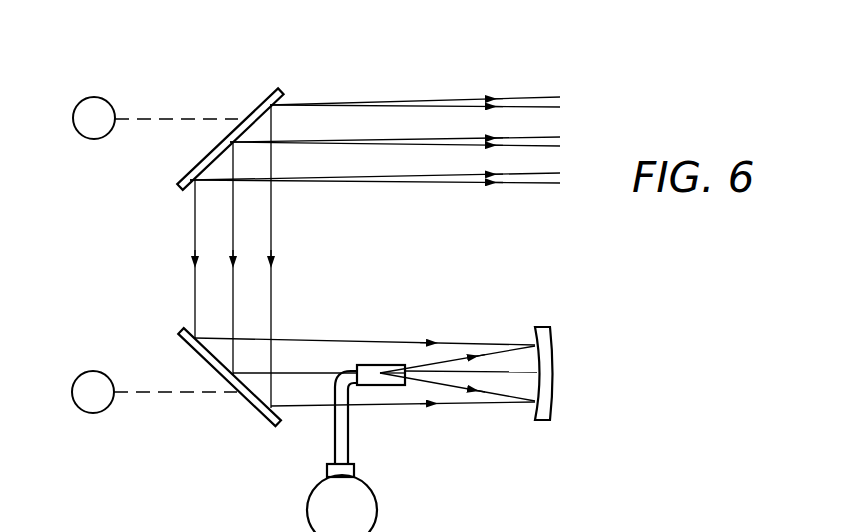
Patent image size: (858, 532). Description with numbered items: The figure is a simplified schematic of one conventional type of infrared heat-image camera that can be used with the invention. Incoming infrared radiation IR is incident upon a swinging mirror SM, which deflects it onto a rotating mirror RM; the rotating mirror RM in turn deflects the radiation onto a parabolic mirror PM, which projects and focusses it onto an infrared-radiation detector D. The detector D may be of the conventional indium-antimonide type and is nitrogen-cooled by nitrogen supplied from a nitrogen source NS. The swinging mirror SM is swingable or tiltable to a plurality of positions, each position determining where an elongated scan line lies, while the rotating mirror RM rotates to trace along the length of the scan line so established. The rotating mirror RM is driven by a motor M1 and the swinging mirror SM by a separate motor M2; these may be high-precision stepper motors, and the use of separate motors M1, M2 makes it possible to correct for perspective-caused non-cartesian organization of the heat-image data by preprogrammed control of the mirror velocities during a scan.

The motor M2 is at (155, 118).
The motor M1 is at (154, 392).
The swinging mirror SM is at (253, 105).
The incoming infrared radiation IR is at (375, 241).
The rotating mirror RM is at (245, 406).
The parabolic mirror PM is at (541, 327).
The infrared-radiation detector D is at (362, 365).
The nitrogen source NS is at (308, 499).